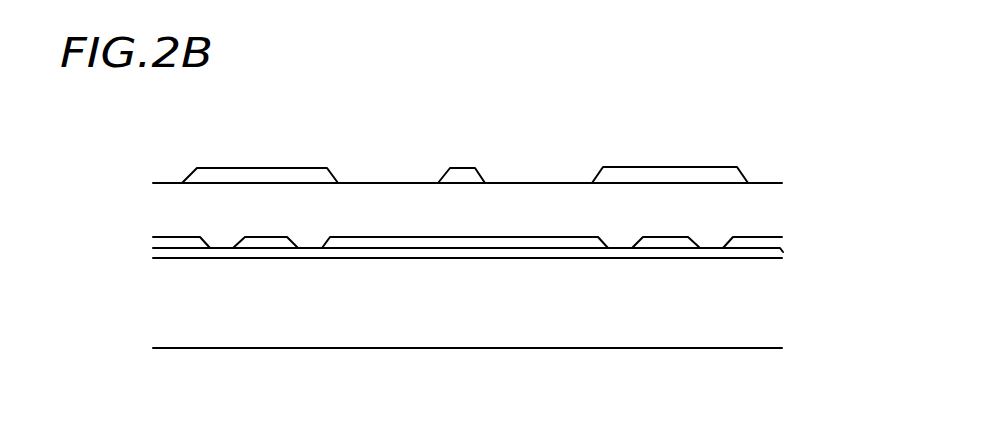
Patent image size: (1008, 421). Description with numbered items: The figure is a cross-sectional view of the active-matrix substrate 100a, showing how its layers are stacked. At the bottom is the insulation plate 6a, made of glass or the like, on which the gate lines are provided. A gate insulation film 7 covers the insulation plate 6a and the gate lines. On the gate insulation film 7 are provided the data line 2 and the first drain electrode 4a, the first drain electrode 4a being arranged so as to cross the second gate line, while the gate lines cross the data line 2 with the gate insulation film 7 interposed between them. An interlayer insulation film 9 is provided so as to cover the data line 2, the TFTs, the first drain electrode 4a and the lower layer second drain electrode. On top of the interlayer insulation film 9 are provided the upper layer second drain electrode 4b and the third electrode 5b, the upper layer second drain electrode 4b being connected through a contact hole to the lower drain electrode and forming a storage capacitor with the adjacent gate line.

The active-matrix substrate 100a is at (708, 115).
The interlayer insulation film 9 is at (362, 202).
The third electrode 5b is at (252, 174).
The upper layer second drain electrode 4b is at (465, 170).
The data line 2 is at (267, 243).
The first drain electrode 4a is at (532, 240).
The gate insulation film 7 is at (153, 258).
The insulation plate 6a is at (190, 308).